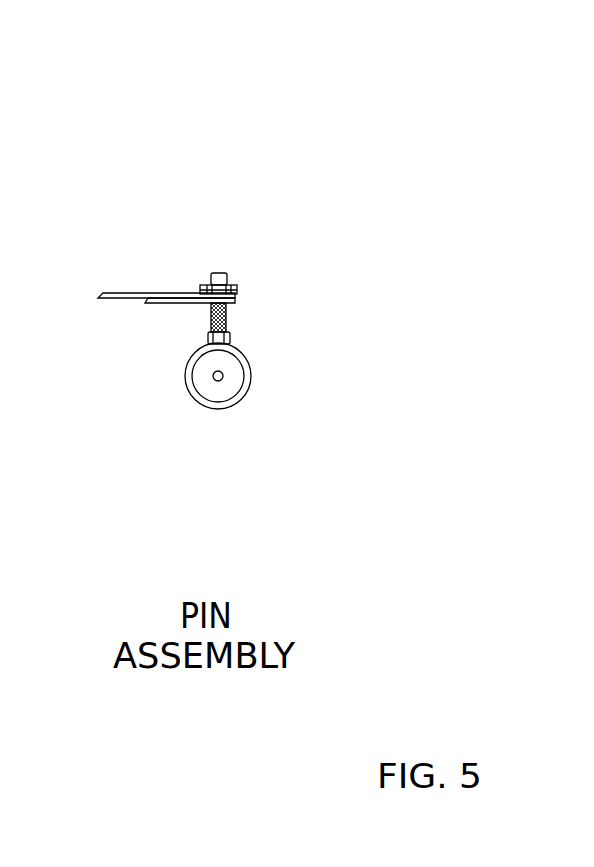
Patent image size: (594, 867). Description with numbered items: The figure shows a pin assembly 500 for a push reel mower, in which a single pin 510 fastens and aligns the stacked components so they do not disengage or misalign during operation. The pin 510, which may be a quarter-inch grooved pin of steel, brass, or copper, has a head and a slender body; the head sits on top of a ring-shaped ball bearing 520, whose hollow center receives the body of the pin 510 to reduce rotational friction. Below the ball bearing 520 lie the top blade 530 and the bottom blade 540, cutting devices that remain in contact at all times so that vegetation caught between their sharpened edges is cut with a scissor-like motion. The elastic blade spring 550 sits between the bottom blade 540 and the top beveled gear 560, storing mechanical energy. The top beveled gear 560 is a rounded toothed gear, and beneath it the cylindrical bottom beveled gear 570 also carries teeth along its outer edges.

The pin assembly 500 is at (433, 153).
The pin 510 is at (182, 219).
The ball bearing 520 is at (235, 280).
The top blade 530 is at (156, 236).
The bottom blade 540 is at (148, 351).
The blade spring 550 is at (138, 377).
The top beveled gear 560 is at (237, 337).
The bottom beveled gear 570 is at (255, 371).